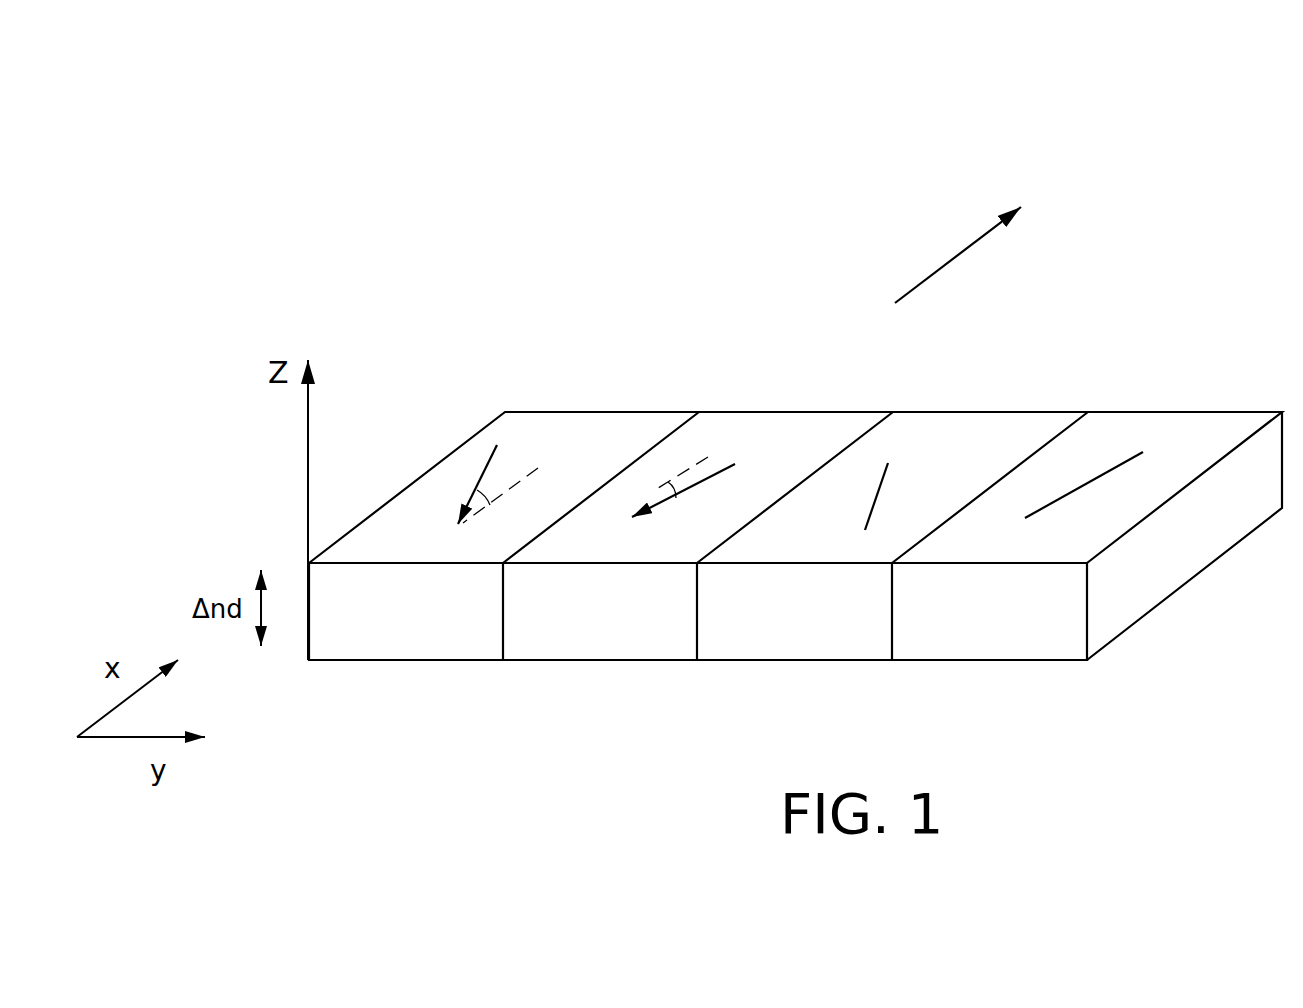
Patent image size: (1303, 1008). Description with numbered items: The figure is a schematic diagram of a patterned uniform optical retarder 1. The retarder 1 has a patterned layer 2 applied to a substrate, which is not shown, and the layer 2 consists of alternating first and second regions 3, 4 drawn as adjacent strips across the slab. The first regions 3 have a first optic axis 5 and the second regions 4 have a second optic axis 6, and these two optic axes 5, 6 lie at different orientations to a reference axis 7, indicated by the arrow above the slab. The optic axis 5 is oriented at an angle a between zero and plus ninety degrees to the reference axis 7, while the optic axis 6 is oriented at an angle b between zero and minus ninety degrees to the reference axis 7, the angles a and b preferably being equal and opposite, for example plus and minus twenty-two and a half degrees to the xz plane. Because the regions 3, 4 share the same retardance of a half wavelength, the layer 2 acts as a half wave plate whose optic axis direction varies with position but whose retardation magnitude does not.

The patterned optical retarder 1 is at (1060, 368).
The patterned layer 2 is at (612, 662).
The first regions 3 is at (728, 428).
The second regions 4 is at (592, 428).
The first optic axis 5 is at (703, 483).
The second optic axis 6 is at (483, 475).
The reference axis 7 is at (943, 263).